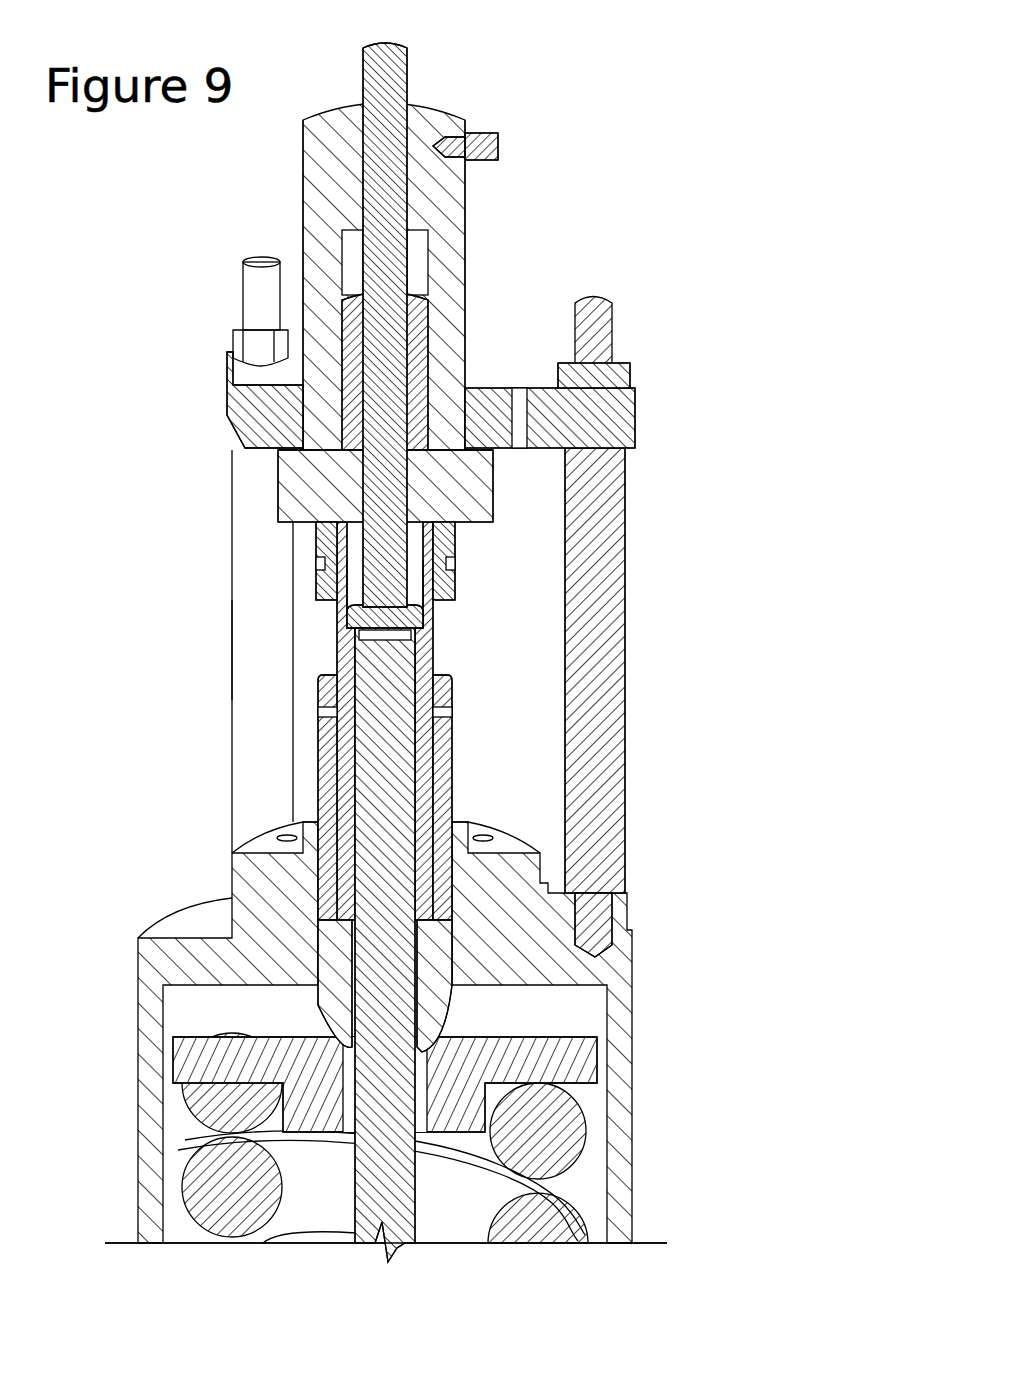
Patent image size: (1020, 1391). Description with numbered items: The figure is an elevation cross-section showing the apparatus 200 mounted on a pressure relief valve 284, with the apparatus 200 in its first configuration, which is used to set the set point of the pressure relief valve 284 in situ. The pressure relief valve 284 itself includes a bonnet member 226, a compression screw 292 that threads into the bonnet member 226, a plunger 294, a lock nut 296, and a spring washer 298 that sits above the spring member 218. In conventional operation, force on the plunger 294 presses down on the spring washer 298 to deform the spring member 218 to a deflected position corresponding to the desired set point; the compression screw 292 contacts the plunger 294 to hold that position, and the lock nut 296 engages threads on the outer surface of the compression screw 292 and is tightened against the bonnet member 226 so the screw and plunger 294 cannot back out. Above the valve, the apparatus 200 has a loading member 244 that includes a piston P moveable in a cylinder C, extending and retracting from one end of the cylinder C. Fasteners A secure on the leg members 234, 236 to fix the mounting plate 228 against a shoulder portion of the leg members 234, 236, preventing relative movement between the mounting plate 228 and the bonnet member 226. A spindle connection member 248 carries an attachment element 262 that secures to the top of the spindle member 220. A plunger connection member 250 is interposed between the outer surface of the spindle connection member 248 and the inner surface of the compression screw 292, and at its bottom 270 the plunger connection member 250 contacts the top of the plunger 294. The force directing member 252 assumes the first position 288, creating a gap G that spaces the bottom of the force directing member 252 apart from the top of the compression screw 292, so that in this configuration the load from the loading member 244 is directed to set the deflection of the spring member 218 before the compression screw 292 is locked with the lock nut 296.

The apparatus 200 is at (712, 178).
The spring member 218 is at (571, 1128).
The spindle member 220 is at (370, 768).
The bonnet member 226 is at (625, 1175).
The mounting plate 228 is at (637, 412).
The leg member 234 is at (603, 630).
The leg member 236 is at (250, 618).
The loading member 244 is at (478, 233).
The spindle connection member 248 is at (377, 440).
The plunger connection member 250 is at (436, 654).
The force directing member 252 is at (453, 547).
The attachment element 262 is at (405, 620).
The bottom 270 is at (465, 720).
The pressure relief valve 284 is at (790, 1043).
The first position 288 is at (480, 555).
The compression screw 292 is at (443, 790).
The plunger 294 is at (438, 963).
The lock nut 296 is at (467, 833).
The spring washer 298 is at (578, 1058).
The cylinder C is at (455, 220).
The piston P is at (420, 340).
The fasteners A is at (236, 330).
The gap G is at (302, 640).